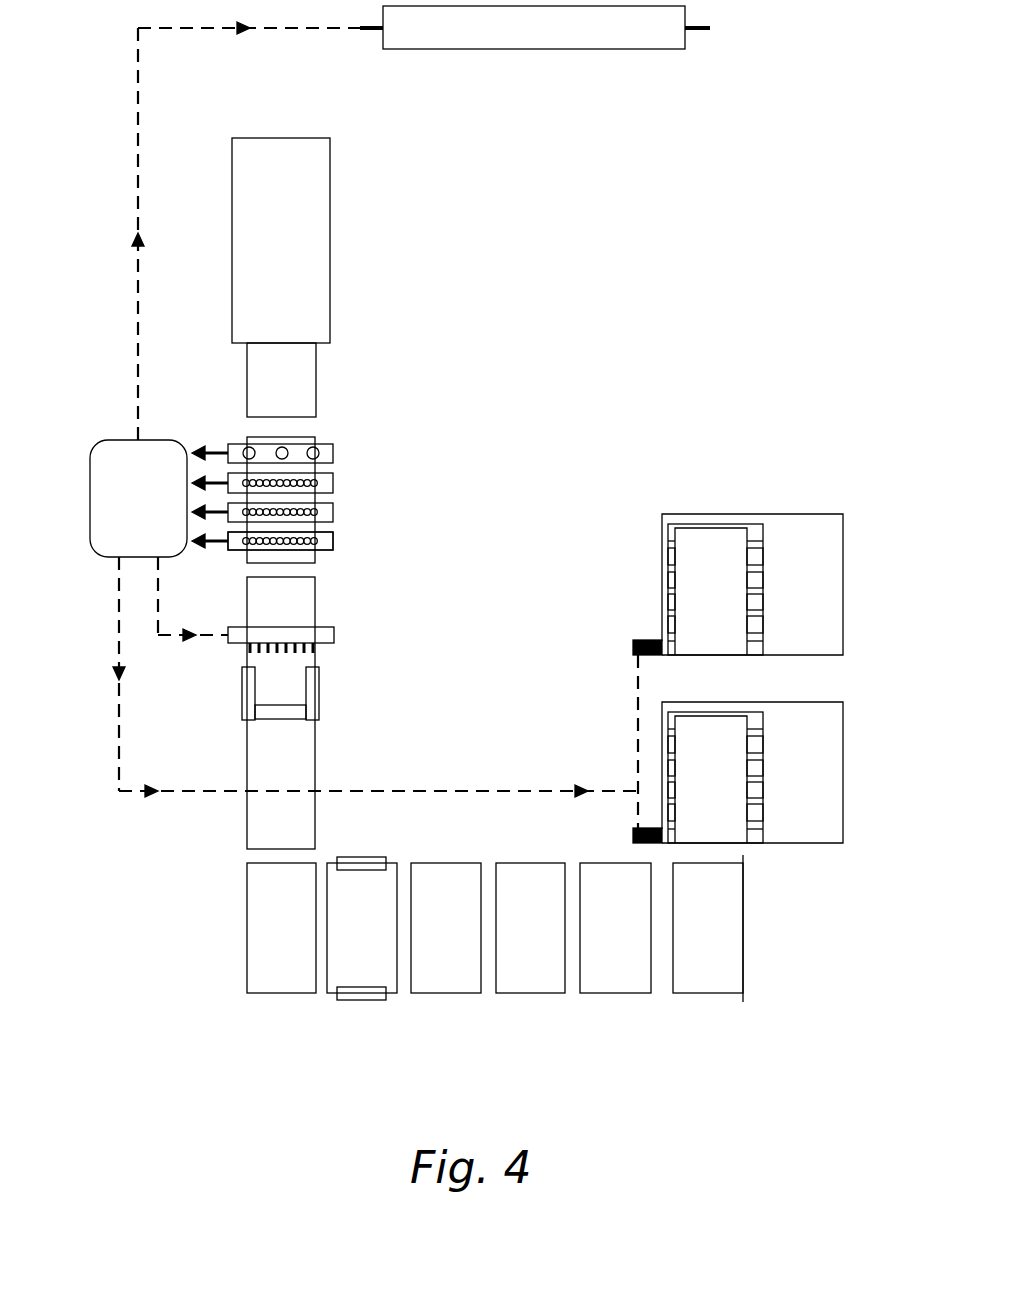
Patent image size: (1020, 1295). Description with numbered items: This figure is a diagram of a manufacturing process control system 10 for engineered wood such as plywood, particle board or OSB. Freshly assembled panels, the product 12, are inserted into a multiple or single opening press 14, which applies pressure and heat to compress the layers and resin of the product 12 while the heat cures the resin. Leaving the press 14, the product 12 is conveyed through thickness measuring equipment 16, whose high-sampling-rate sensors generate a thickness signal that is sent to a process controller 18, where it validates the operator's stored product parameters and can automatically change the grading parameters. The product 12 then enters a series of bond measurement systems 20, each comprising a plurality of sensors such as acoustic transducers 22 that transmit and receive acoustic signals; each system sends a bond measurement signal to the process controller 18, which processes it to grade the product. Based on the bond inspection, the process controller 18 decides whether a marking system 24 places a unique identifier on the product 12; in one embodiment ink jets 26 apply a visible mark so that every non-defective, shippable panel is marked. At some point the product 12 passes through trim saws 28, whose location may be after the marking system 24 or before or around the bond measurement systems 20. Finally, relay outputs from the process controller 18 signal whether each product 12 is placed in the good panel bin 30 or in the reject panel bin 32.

The manufacturing process control system 10 is at (583, 198).
The product 12 is at (304, 375).
The press 14 is at (307, 237).
The thickness measuring equipment 16 is at (325, 452).
The process controller 18 is at (107, 495).
The bond measurement systems 20 is at (318, 484).
The acoustic transducers 22 is at (243, 543).
The marking system 24 is at (325, 636).
The ink jets 26 is at (247, 650).
The trim saws 28 is at (250, 703).
The good panel bin 30 is at (818, 727).
The reject panel bin 32 is at (818, 540).